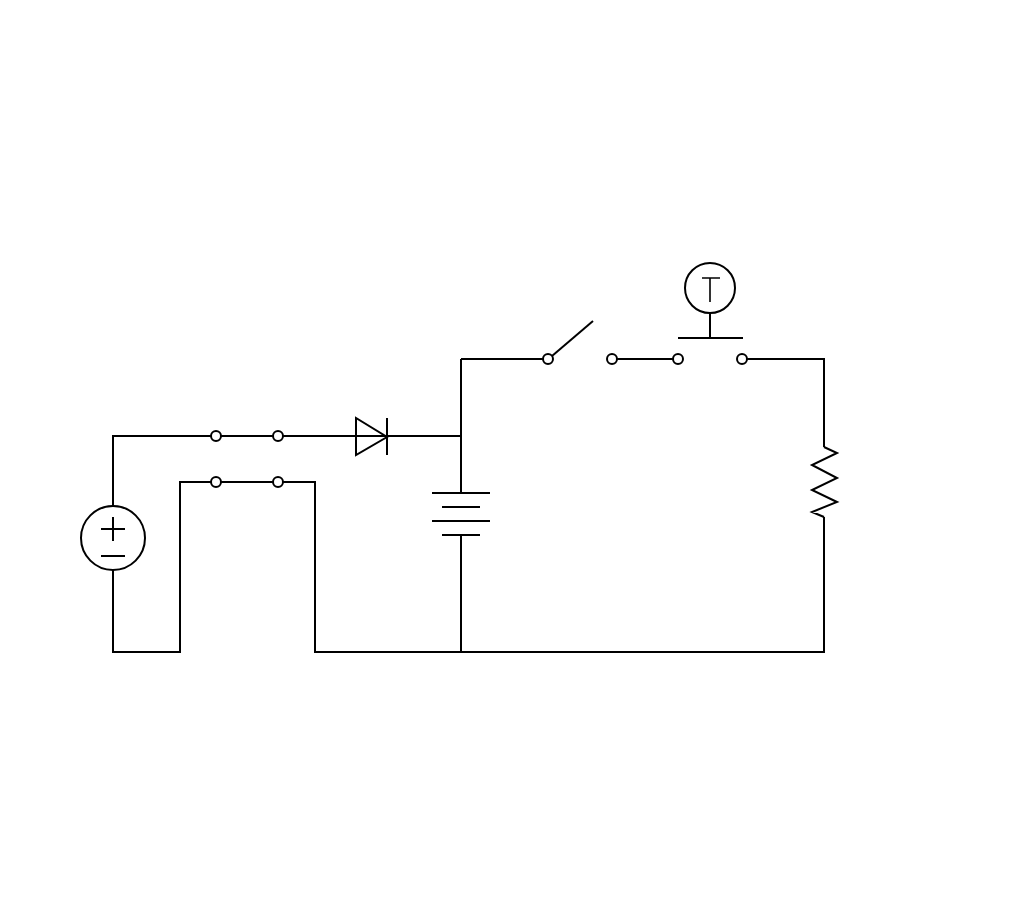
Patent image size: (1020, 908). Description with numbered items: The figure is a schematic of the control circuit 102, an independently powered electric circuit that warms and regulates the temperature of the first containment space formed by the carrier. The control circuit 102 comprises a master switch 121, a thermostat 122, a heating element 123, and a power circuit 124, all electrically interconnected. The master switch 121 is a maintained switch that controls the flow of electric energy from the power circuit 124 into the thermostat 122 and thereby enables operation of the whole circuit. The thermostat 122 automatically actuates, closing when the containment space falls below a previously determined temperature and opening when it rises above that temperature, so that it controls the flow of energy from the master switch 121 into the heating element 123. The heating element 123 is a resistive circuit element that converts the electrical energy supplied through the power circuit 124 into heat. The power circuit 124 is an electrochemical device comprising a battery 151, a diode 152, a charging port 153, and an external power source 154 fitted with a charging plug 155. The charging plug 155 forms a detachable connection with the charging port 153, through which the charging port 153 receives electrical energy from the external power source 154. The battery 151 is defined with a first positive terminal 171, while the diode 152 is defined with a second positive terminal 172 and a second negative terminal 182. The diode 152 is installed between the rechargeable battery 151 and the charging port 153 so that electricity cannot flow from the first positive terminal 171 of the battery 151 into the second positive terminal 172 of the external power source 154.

The control circuit 102 is at (153, 109).
The power circuit 124 is at (130, 360).
The charging plug 155 is at (216, 424).
The charging port 153 is at (278, 424).
The external power source 154 is at (110, 575).
The second positive terminal 172 is at (106, 514).
The second negative terminal 182 is at (100, 568).
The diode 152 is at (375, 407).
The battery 151 is at (498, 508).
The first positive terminal 171 is at (470, 477).
The master switch 121 is at (570, 320).
The thermostat 122 is at (747, 320).
The heating element 123 is at (848, 489).